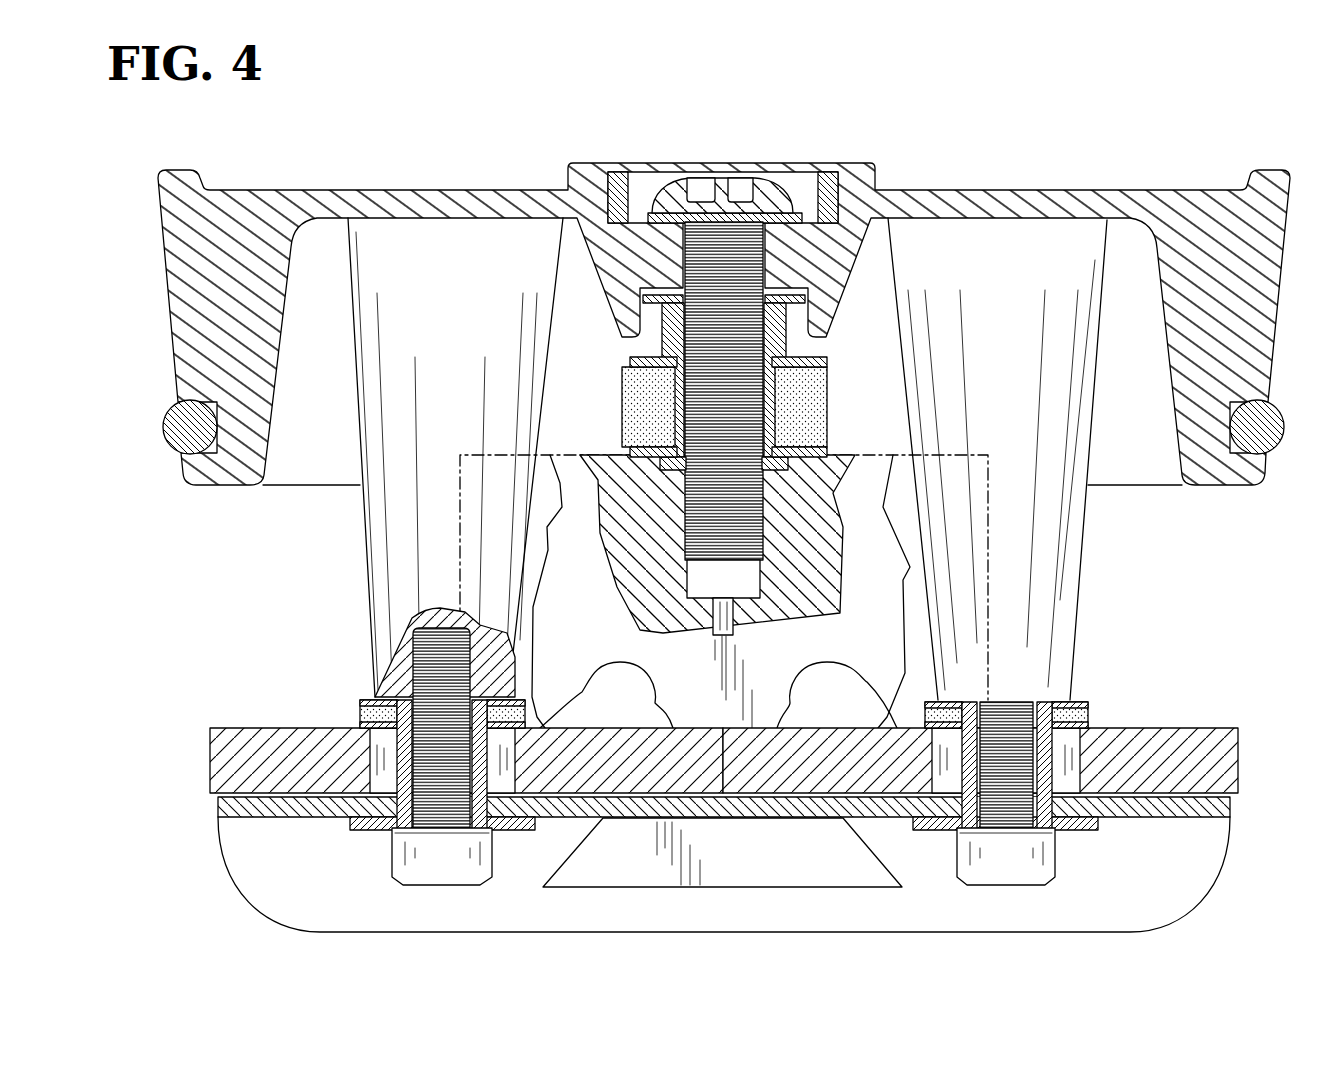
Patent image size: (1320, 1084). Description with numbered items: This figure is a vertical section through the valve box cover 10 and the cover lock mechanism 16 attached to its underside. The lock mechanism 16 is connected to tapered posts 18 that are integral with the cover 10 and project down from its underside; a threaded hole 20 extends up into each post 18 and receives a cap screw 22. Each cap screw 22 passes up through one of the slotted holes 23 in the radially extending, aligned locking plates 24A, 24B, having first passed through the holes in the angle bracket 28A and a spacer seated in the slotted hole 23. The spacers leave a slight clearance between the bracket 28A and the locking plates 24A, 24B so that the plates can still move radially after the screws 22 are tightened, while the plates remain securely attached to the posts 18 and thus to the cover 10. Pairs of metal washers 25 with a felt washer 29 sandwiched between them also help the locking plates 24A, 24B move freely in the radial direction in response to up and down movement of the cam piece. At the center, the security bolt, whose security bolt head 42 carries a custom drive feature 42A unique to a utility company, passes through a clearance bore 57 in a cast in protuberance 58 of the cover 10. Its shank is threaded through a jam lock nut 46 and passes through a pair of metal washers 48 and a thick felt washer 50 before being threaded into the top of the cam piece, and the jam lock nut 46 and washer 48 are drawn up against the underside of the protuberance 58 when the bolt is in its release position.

The cover 10 is at (437, 170).
The cover lock mechanism 16 is at (852, 345).
The tapered posts 18 is at (372, 513).
The threaded hole 20 is at (432, 672).
The cap screw 22 is at (392, 848).
The slotted holes 23 is at (377, 770).
The locking plate 24A is at (232, 757).
The locking plate 24B is at (1190, 748).
The metal washers 25 is at (368, 717).
The angle bracket 28A is at (437, 918).
The felt washer 29 is at (494, 627).
The security bolt head 42 is at (722, 149).
The slot 42A is at (740, 188).
The jam lock nut 46 is at (810, 350).
The metal washers 48 is at (795, 212).
The thick felt washer 50 is at (622, 408).
The clearance bore 57 is at (712, 282).
The cast in protuberance 58 is at (610, 316).